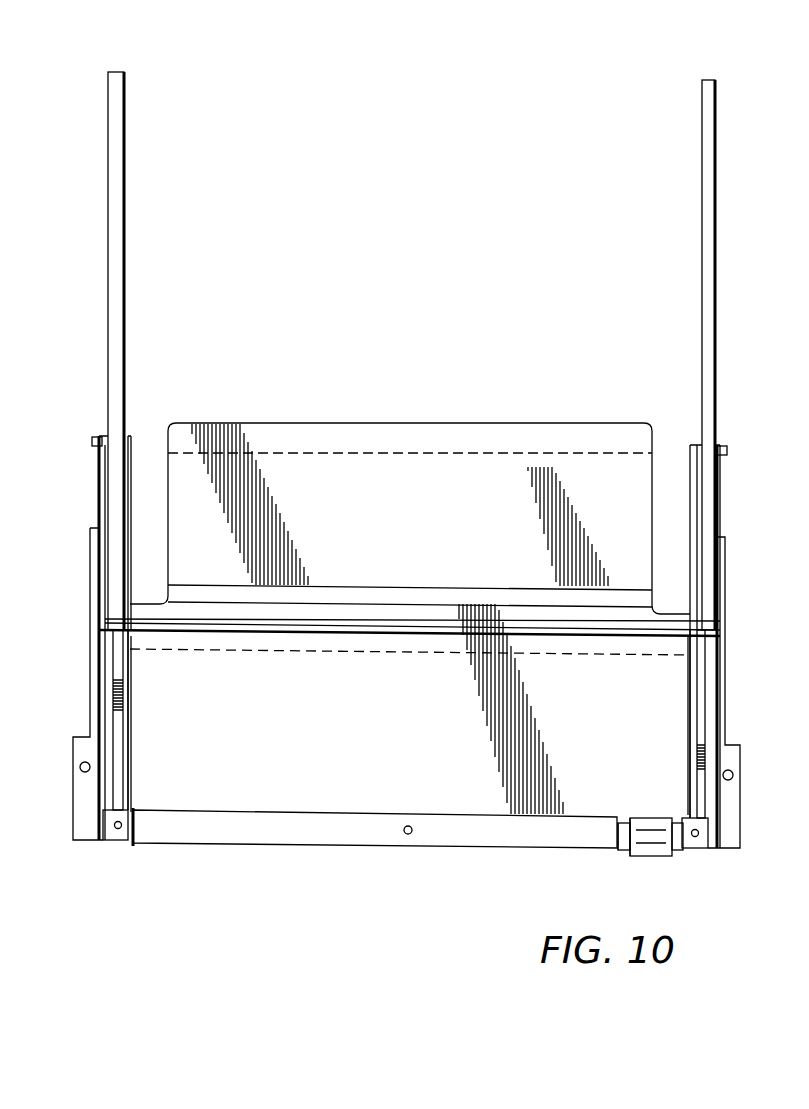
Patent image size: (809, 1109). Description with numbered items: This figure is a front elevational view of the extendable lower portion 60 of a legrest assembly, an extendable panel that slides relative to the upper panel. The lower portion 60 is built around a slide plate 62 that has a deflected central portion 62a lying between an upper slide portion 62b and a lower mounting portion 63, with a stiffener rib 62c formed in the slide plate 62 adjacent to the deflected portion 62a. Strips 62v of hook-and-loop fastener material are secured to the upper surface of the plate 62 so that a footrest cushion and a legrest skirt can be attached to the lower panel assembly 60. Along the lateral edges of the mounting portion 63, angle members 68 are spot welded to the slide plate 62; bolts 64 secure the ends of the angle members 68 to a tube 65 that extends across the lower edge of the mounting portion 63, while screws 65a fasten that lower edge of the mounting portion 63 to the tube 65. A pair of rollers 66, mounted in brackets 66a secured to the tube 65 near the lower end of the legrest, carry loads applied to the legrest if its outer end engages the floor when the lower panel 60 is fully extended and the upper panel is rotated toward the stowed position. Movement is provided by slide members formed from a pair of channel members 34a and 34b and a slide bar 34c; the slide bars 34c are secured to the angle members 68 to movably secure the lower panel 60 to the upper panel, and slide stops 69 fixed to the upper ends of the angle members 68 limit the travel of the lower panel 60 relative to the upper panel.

The channel member 34a is at (125, 165).
The channel member 34b is at (100, 470).
The slide bar 34c is at (100, 673).
The extendable lower portion 60 is at (724, 497).
The slide plate 62 is at (507, 424).
The deflected central portion 62a is at (455, 601).
The upper slide portion 62b is at (272, 452).
The stiffener rib 62c is at (240, 630).
The strips of VELCRO fastener material 62v is at (530, 446).
The lower mounting portion 63 is at (672, 741).
The bolts 64 is at (118, 829).
The tube 65 is at (190, 828).
The screws 65a is at (408, 826).
The rollers 66 is at (648, 857).
The brackets 66a is at (626, 819).
The angle members 68 is at (130, 760).
The slide stops 69 is at (95, 437).